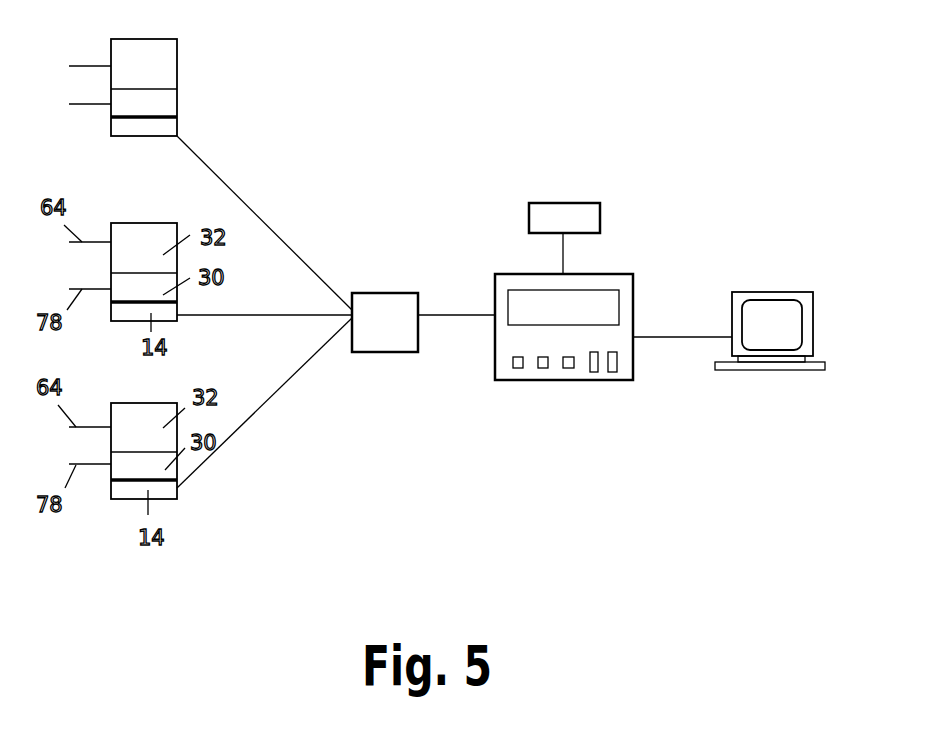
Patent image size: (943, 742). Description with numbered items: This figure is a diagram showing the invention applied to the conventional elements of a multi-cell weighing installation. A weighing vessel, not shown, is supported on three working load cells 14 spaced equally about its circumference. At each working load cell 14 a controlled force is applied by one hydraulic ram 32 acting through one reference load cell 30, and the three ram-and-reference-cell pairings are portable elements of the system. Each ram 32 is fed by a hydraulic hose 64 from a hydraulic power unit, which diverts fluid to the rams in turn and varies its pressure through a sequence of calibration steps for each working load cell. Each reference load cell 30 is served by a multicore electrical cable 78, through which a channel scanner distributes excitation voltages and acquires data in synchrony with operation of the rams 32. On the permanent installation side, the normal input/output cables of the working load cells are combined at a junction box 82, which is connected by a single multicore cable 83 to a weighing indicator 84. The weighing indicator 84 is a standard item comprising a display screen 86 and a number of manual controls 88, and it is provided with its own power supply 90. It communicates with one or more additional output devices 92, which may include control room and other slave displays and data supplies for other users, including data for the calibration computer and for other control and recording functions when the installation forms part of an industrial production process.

The working load cell 14 is at (154, 128).
The reference load cell 30 is at (163, 105).
The hydraulic ram 32 is at (165, 63).
The hydraulic hose 64 is at (82, 66).
The multicore electrical cable 78 is at (82, 105).
The junction box 82 is at (378, 290).
The multicore cable 83 is at (457, 318).
The weighing indicator 84 is at (569, 320).
The display screen 86 is at (593, 307).
The manual controls 88 is at (543, 368).
The power supply 90 is at (567, 212).
The additional output device 92 is at (768, 290).